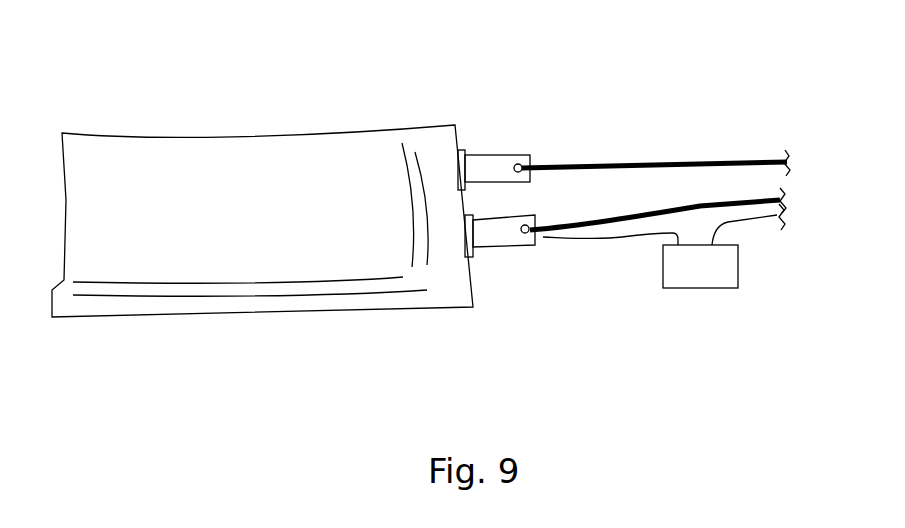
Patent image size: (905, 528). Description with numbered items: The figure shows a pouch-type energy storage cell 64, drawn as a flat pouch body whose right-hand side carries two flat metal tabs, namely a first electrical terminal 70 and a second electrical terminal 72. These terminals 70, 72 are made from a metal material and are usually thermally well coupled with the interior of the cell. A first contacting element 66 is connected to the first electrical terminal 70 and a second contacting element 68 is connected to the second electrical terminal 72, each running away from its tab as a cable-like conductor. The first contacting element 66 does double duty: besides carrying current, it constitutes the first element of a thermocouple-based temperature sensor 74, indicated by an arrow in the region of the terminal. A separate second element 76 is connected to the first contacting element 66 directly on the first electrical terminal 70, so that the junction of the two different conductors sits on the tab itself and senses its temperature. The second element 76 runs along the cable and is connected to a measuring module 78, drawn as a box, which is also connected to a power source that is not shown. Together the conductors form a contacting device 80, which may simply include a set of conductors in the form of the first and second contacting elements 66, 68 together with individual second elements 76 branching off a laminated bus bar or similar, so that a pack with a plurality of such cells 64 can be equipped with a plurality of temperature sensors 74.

The energy storage cell 64 is at (292, 152).
The first contacting element 66 is at (595, 222).
The second contacting element 68 is at (595, 163).
The first electrical terminal 70 is at (507, 233).
The second electrical terminal 72 is at (490, 168).
The thermocouple-based temperature sensor 74 is at (580, 273).
The second element 76 is at (622, 238).
The measuring module 78 is at (712, 278).
The contacting device 80 is at (708, 120).